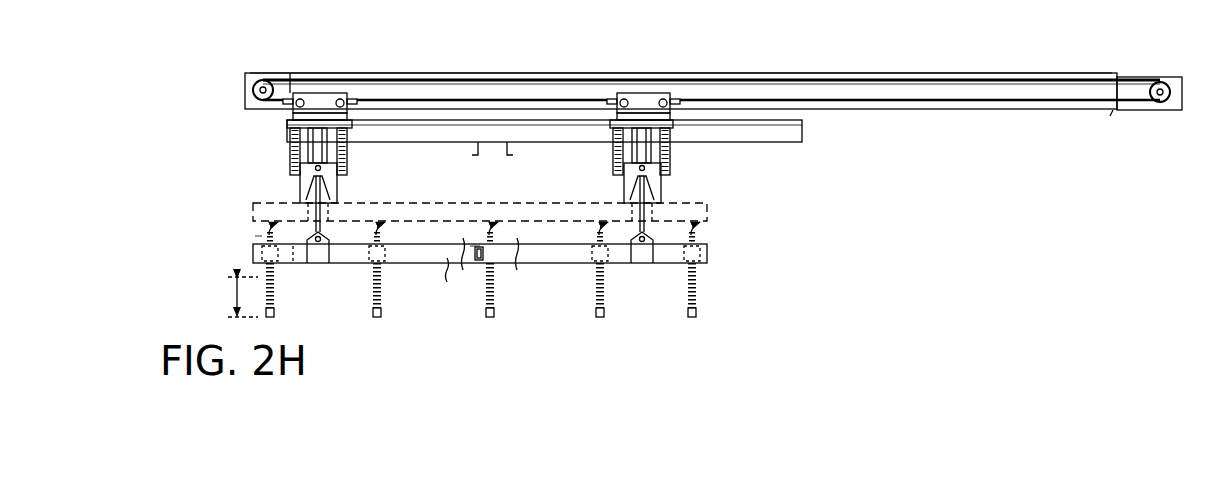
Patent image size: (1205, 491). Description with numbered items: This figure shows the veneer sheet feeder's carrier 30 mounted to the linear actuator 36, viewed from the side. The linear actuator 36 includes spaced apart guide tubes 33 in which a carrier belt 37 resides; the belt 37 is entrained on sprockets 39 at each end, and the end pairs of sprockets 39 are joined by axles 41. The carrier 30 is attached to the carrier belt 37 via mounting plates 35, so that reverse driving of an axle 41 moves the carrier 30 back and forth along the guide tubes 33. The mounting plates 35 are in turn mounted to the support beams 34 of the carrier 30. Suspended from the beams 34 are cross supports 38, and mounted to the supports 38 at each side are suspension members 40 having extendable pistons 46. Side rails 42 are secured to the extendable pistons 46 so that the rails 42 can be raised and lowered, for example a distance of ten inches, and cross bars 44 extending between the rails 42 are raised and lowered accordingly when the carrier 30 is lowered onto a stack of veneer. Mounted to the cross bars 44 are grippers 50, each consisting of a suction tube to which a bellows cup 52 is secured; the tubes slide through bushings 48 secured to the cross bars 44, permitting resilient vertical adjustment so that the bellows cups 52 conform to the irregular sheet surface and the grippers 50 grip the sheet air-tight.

The carrier 30 is at (420, 266).
The guide tubes 33 is at (815, 82).
The support beams 34 is at (460, 120).
The mounting plates 35 is at (295, 117).
The linear actuator 36 is at (905, 72).
The carrier belt 37 is at (365, 78).
The cross supports 38 is at (347, 150).
The sprockets 39 is at (259, 82).
The suspension members 40 is at (337, 186).
The axles 41 is at (256, 87).
The side rails 42 is at (428, 193).
The cross bars 44 is at (255, 238).
The extendable pistons 46 is at (315, 150).
The bushings 48 is at (485, 262).
The grippers 50 is at (703, 296).
The bellows cups 52 is at (278, 311).